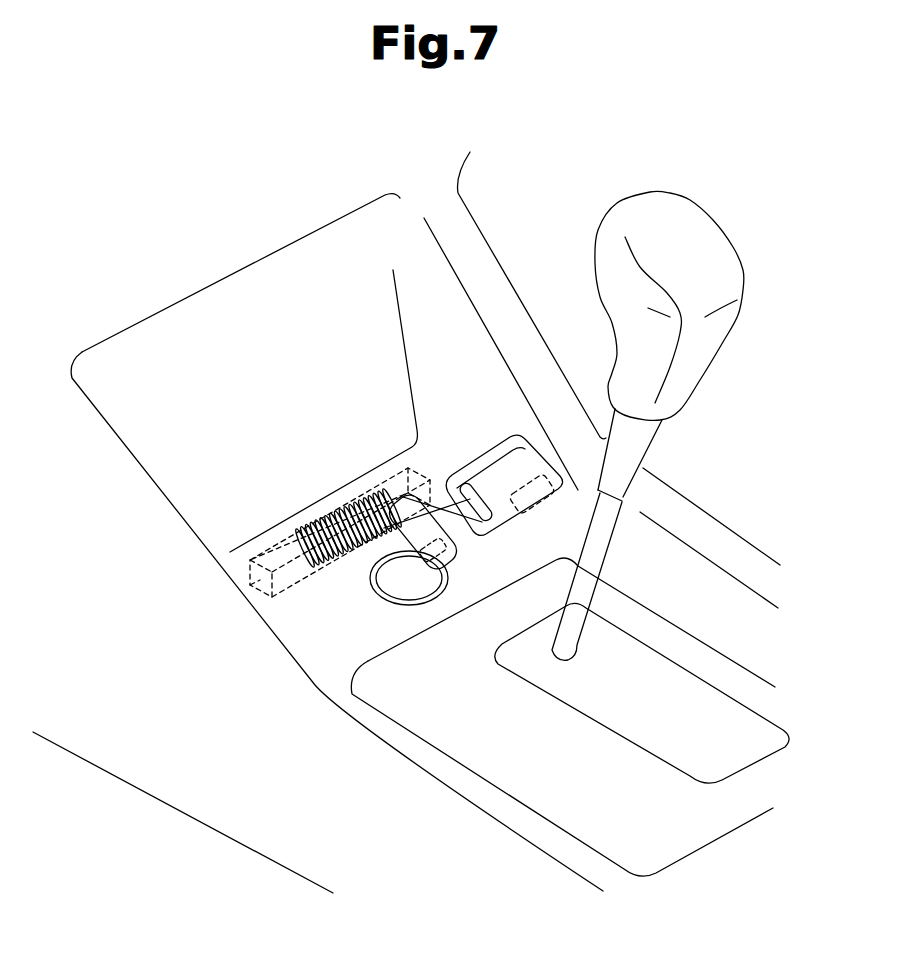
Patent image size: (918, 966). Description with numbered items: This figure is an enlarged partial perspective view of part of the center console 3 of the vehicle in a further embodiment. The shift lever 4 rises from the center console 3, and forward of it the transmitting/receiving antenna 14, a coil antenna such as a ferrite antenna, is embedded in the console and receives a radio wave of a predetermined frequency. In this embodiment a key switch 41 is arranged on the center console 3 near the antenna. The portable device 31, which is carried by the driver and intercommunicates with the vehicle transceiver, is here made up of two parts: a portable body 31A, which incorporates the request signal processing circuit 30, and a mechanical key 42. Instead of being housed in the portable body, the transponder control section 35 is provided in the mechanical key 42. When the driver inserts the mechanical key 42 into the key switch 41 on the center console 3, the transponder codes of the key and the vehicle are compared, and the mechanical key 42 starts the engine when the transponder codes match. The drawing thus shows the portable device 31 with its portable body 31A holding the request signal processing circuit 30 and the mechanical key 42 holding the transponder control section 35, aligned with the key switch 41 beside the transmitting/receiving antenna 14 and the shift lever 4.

The center console 3 is at (306, 660).
The shift lever 4 is at (733, 275).
The transmitting/receiving antenna 14 is at (268, 553).
The request signal processing circuit 30 is at (543, 512).
The portable device 31 is at (438, 435).
The portable body 31A is at (497, 437).
The transponder control section 35 is at (448, 557).
The key switch 41 is at (388, 583).
The mechanical key 42 is at (410, 596).